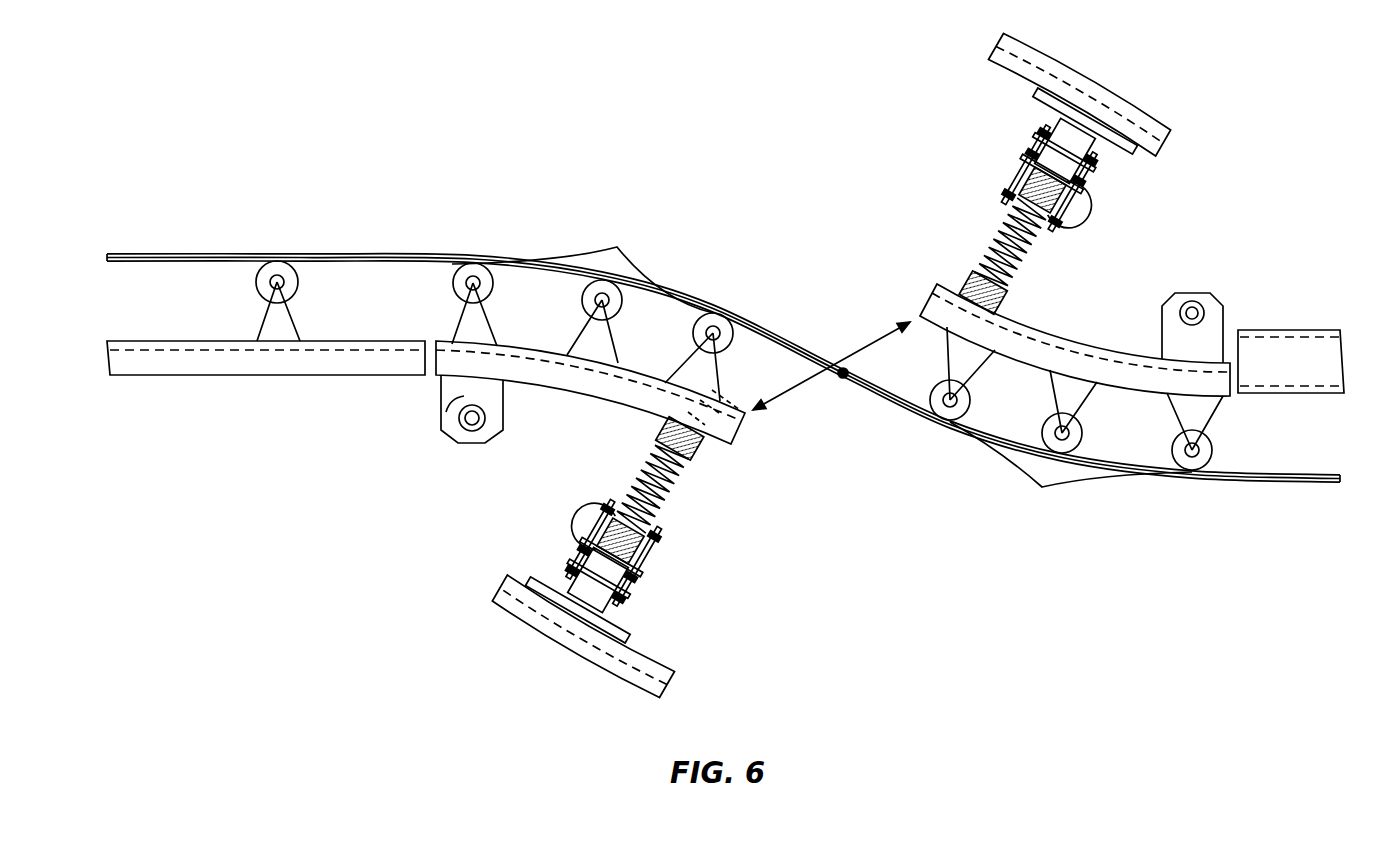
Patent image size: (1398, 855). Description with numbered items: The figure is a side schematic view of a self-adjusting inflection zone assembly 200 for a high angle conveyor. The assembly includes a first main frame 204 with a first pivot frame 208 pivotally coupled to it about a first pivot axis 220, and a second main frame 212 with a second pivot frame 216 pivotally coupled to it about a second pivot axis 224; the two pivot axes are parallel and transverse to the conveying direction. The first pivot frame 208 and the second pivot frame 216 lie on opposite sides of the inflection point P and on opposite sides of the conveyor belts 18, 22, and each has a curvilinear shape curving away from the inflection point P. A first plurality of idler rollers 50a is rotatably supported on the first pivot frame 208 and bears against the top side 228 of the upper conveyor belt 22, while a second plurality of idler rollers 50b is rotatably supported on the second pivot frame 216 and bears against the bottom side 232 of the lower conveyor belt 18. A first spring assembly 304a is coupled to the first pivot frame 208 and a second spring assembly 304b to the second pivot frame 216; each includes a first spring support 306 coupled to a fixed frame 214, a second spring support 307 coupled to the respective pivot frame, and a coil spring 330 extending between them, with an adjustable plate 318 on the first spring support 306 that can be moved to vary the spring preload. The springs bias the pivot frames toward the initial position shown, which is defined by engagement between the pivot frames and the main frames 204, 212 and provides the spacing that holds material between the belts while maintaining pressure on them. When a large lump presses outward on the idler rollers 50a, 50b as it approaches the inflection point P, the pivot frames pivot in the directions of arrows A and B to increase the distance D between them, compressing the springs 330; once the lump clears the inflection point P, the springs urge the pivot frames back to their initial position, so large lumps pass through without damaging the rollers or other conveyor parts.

The self-adjusting inflection zone assembly 200 is at (645, 117).
The lower conveyor belt 18 is at (290, 261).
The upper conveyor belt 22 is at (350, 262).
The first plurality of idler rollers 50a is at (1071, 475).
The second plurality of idler rollers 50b is at (582, 261).
The first main frame 204 is at (1290, 350).
The first pivot frame 208 is at (1070, 352).
The second main frame 212 is at (335, 366).
The fixed frame 214 is at (1108, 105).
The second pivot frame 216 is at (615, 386).
The first pivot axis 220 is at (1192, 312).
The second pivot axis 224 is at (470, 431).
The top side of the upper conveyor belt 228 is at (1320, 467).
The bottom side of the lower conveyor belt 232 is at (118, 276).
The first spring assembly 304a is at (935, 222).
The second spring assembly 304b is at (698, 541).
The first spring support 306 is at (1035, 103).
The second spring support 307 is at (935, 288).
The adjustable plate 318 is at (1022, 167).
The spring 330 is at (1015, 273).
The pivot direction of the first pivot frame A is at (1213, 322).
The pivot direction of the second pivot frame B is at (487, 406).
The distance between the pivot frames D is at (857, 352).
The inflection point P is at (842, 380).